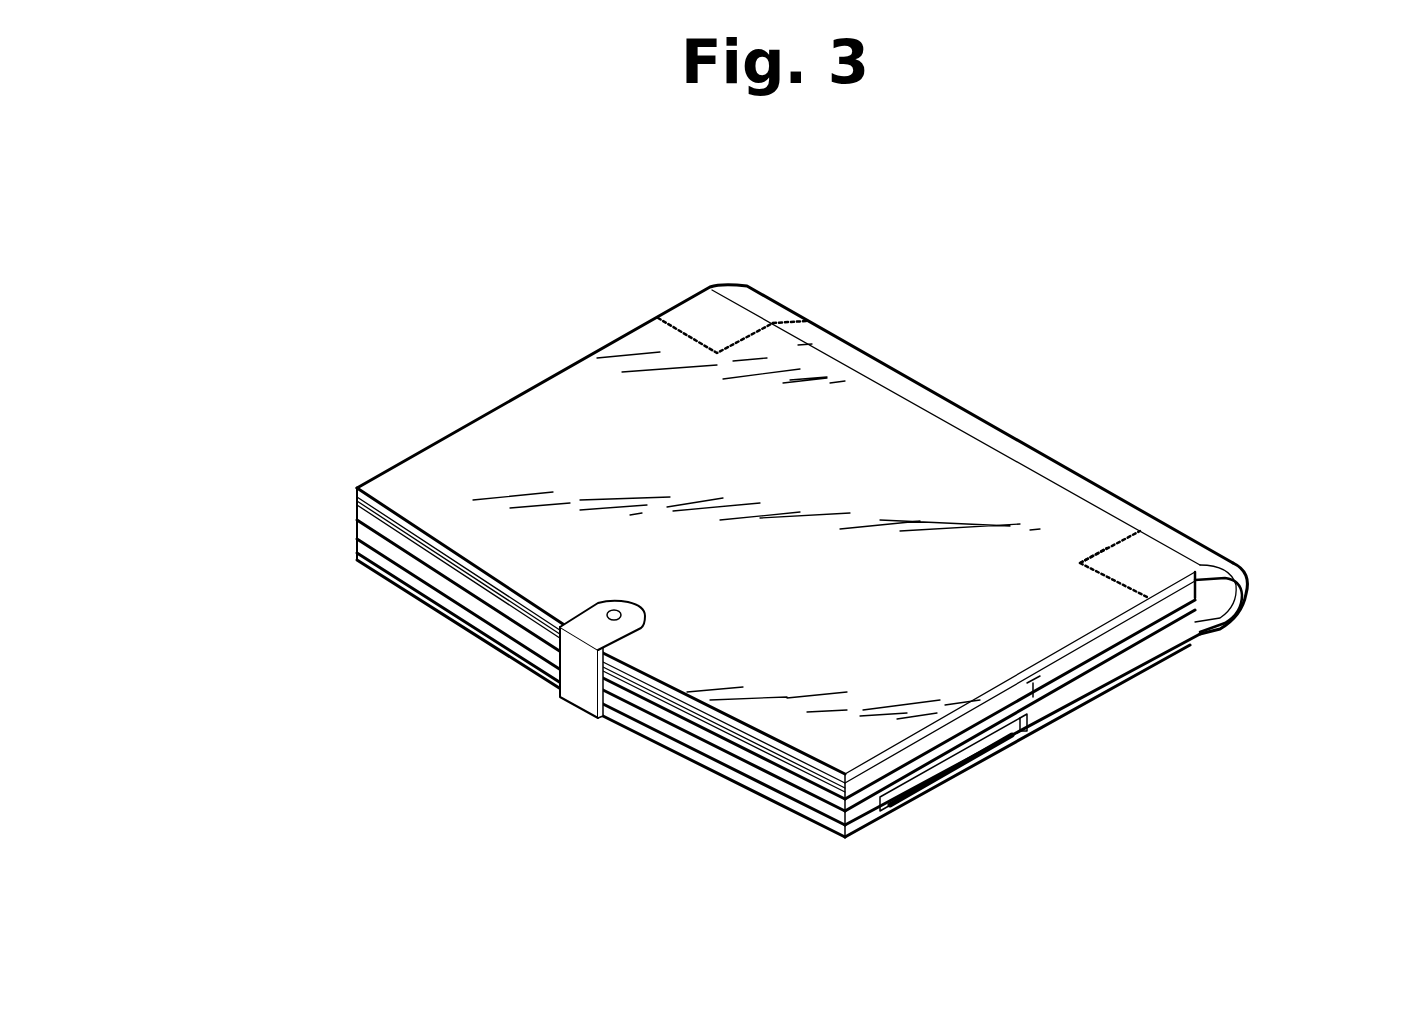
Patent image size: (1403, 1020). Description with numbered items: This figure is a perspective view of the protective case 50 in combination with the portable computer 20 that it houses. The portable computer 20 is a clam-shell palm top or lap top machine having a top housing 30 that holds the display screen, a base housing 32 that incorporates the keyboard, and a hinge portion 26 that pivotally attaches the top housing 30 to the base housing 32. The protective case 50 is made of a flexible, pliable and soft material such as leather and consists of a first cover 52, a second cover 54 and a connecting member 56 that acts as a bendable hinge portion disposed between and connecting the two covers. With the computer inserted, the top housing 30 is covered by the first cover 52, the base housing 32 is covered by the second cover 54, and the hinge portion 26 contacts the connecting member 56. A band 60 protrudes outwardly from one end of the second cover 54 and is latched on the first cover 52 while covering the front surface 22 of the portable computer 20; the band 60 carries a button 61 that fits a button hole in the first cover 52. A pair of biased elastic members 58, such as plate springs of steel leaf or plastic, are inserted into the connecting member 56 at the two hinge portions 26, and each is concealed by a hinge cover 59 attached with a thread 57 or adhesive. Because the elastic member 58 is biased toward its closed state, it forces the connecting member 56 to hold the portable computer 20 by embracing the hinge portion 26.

The portable computer 20 is at (790, 697).
The front surface 22 is at (822, 812).
The hinge portion 26 is at (1213, 588).
The top housing 30 is at (1022, 690).
The base housing 32 is at (934, 786).
The protective case 50 is at (819, 494).
The first cover 52 is at (548, 402).
The second cover 54 is at (1013, 742).
The connecting member 56 is at (1247, 593).
The thread 57 is at (787, 321).
The elastic member 58 is at (706, 324).
The hinge cover 59 is at (754, 308).
The band 60 is at (537, 701).
The button 61 is at (619, 623).